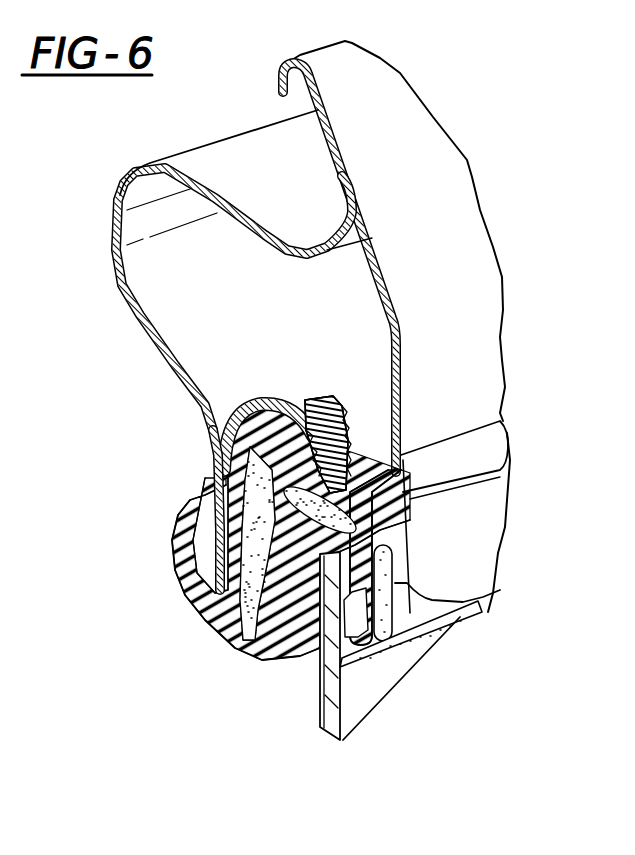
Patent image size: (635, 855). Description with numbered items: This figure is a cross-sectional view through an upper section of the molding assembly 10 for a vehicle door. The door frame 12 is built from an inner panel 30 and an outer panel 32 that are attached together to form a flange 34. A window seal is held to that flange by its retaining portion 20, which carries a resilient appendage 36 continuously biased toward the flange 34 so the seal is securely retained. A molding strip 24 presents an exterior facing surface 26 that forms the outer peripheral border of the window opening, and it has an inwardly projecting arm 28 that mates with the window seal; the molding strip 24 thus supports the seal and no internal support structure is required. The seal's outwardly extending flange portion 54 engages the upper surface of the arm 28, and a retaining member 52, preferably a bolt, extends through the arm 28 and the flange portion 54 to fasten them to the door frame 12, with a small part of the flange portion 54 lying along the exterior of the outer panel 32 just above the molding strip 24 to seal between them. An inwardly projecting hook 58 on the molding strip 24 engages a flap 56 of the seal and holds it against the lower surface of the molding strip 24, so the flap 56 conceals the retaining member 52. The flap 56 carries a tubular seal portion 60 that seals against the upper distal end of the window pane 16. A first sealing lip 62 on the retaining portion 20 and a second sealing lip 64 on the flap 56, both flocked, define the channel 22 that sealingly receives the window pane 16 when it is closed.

The molding assembly 10 is at (227, 697).
The door frame 12 is at (307, 53).
The window pane 16 is at (373, 707).
The retaining portion 20 is at (235, 552).
The channel 22 is at (300, 666).
The molding strip 24 is at (500, 590).
The exterior facing surface 26 is at (462, 564).
The inwardly projecting arm 28 is at (373, 450).
The inner panel 30 is at (163, 323).
The outer panel 32 is at (453, 177).
The flange 34 is at (207, 477).
The resilient appendage 36 is at (167, 557).
The retaining member 52 is at (310, 403).
The flange portion 54 is at (352, 460).
The flap 56 is at (407, 533).
The inwardly projecting hook 58 is at (397, 607).
The tubular seal portion 60 is at (310, 527).
The first sealing lip 62 is at (250, 645).
The second sealing lip 64 is at (375, 652).